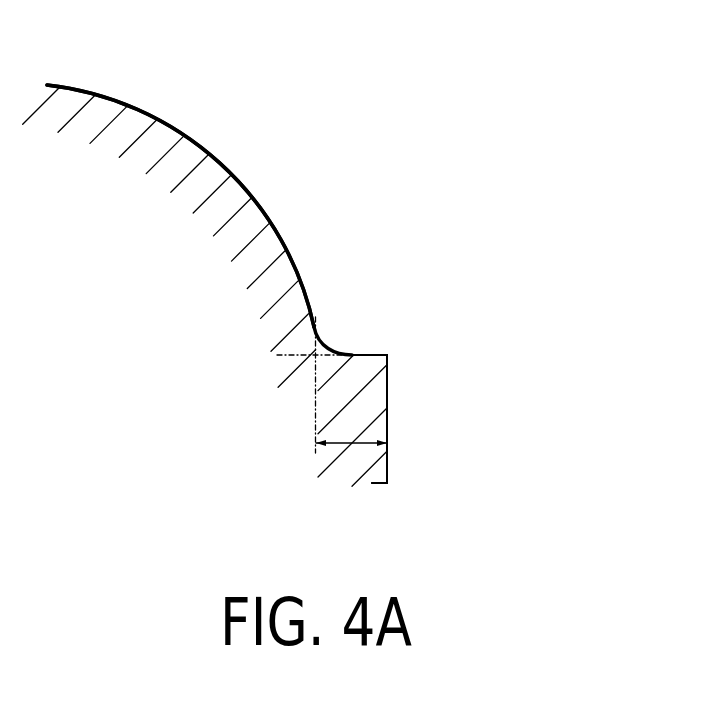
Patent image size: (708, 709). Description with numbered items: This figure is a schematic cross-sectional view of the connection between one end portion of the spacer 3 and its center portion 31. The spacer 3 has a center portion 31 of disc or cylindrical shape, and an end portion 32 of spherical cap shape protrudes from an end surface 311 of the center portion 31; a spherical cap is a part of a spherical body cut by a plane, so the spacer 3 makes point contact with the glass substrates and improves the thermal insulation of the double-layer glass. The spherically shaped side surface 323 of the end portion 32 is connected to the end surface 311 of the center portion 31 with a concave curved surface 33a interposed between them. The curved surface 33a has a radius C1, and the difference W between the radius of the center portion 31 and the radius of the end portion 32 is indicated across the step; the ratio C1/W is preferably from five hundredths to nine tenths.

The spacer 3 is at (99, 81).
The end portion 32 is at (255, 206).
The side surface 323 is at (243, 188).
The center portion 31 is at (479, 419).
The end surface 311 is at (387, 402).
The curved surface 33a is at (307, 320).
The radius of the curved surface C1 is at (325, 331).
The difference between the radii W is at (354, 444).